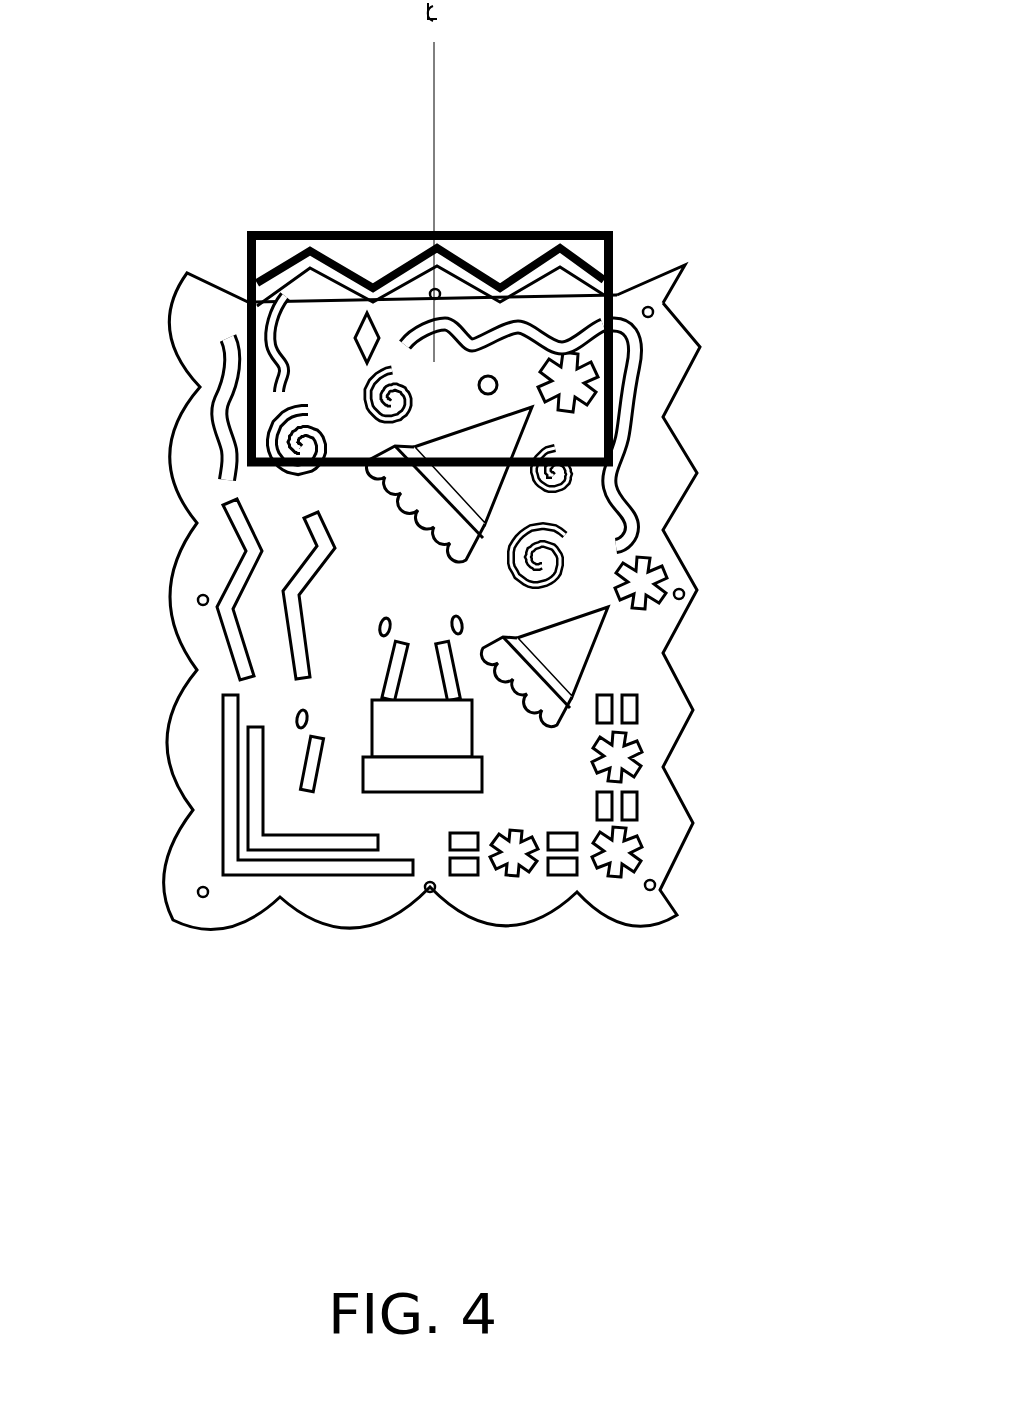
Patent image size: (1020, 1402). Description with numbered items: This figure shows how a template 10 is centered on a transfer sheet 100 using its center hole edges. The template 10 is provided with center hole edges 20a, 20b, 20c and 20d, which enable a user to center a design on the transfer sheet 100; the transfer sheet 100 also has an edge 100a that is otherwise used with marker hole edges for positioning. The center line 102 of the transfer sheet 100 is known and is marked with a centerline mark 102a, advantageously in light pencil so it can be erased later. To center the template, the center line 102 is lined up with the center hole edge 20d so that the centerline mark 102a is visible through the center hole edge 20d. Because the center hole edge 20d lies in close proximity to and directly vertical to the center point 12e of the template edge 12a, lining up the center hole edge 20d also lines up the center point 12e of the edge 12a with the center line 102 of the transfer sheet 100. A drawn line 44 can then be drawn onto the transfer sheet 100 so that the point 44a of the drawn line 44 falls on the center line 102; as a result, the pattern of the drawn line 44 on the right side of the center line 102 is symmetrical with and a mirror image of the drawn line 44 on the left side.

The template 10 is at (687, 347).
The template edge 12a is at (655, 278).
The center point of edge 12a 12e is at (488, 231).
The center hole edge 20a is at (197, 598).
The center hole edge 20b is at (424, 895).
The center hole edge 20c is at (687, 595).
The center hole edge 20d is at (435, 290).
The drawn line 44 is at (353, 231).
The point of drawn line 44a is at (443, 231).
The transfer sheet 100 is at (277, 231).
The edge of transfer sheet 100a is at (590, 231).
The center line 102 is at (435, 96).
The centerline mark 102a is at (393, 231).